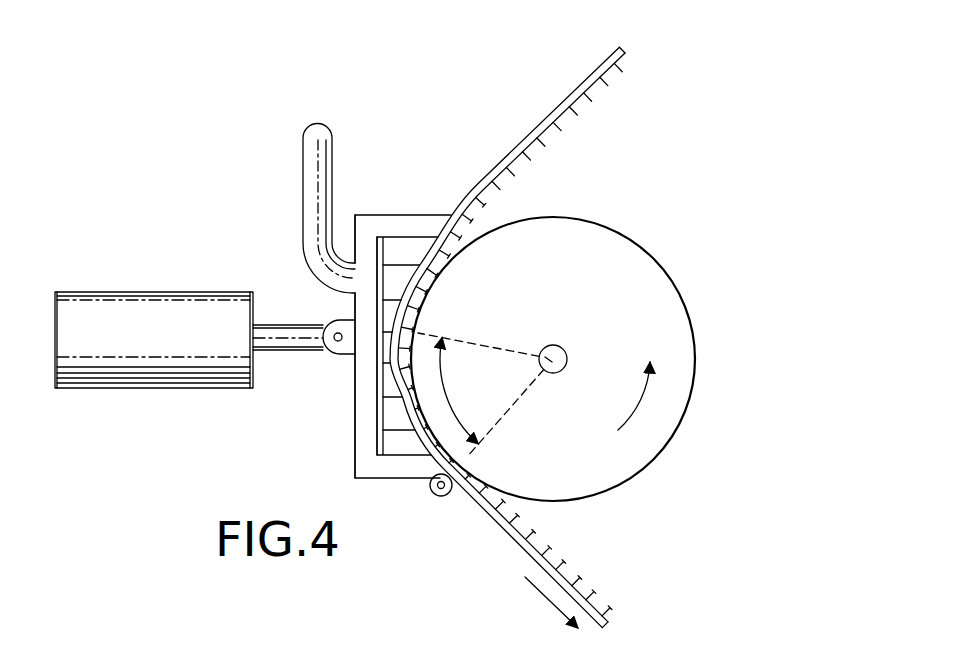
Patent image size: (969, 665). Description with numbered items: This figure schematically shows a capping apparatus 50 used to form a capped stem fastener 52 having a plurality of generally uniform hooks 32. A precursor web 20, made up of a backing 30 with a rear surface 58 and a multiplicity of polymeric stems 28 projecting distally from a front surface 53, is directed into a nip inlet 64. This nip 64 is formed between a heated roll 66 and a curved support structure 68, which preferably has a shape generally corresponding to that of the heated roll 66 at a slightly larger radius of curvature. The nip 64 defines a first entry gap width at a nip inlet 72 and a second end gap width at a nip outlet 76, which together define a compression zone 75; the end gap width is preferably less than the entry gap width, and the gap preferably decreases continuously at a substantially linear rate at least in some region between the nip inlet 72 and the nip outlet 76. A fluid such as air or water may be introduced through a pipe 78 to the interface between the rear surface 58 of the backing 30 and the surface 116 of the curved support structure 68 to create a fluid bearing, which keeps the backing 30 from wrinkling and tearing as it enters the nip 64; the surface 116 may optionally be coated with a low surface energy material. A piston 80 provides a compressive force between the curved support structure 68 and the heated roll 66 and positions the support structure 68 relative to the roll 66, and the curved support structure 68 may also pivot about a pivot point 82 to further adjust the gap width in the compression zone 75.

The precursor web 20 is at (544, 319).
The front surface 53 is at (628, 58).
The backing 30 is at (560, 104).
The polymeric stems 28 is at (578, 117).
The rear surface 58 is at (523, 140).
The nip inlet 72 is at (479, 224).
The surface 116 is at (418, 255).
The pipe 78 is at (306, 150).
The capping apparatus 50 is at (725, 154).
The nip inlet 64 is at (518, 212).
The piston 80 is at (139, 291).
The heated roll 66 is at (632, 322).
The compression zone 75 is at (445, 388).
The curved support structure 68 is at (362, 406).
The pivot point 82 is at (430, 489).
The nip outlet 76 is at (562, 520).
The capped stem fastener 52 is at (526, 552).
The hooks 32 is at (566, 562).